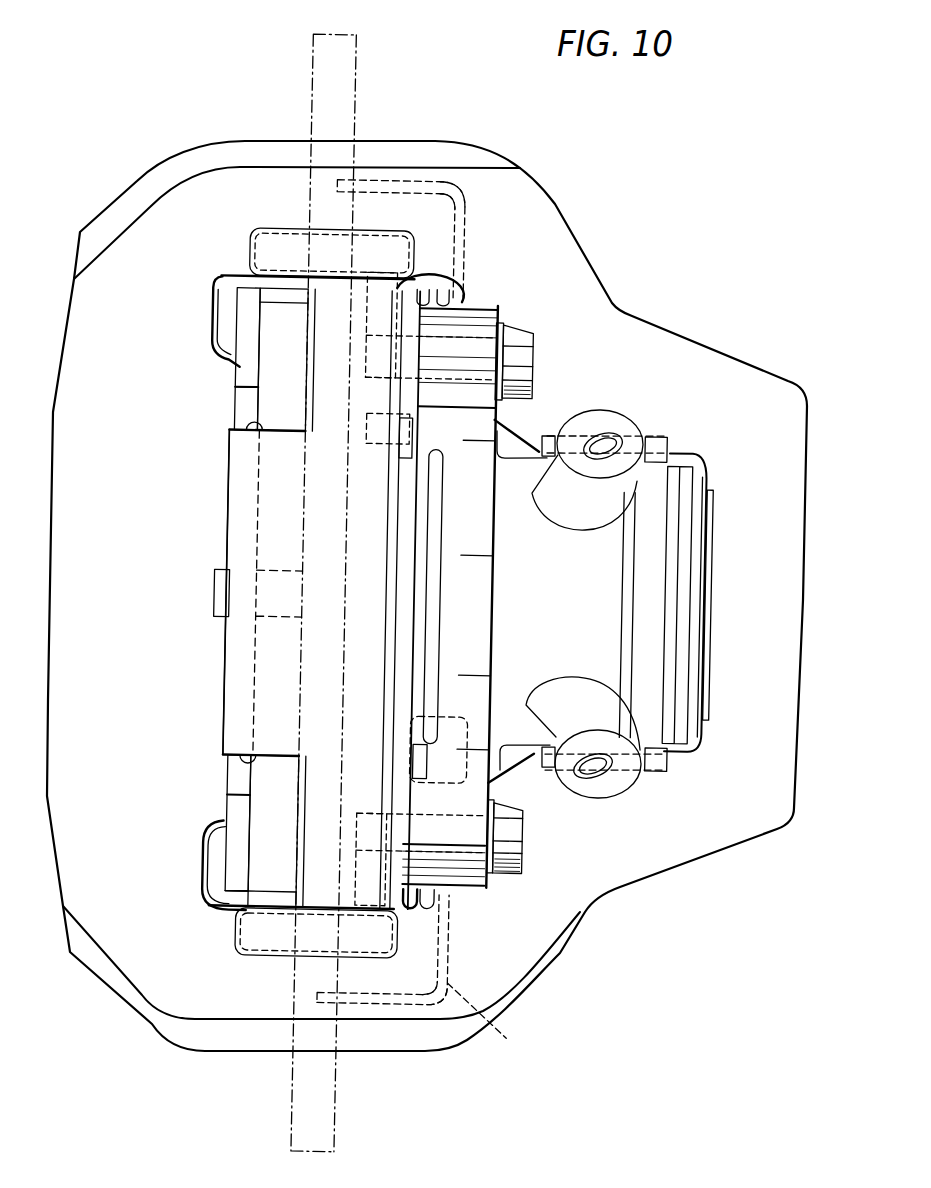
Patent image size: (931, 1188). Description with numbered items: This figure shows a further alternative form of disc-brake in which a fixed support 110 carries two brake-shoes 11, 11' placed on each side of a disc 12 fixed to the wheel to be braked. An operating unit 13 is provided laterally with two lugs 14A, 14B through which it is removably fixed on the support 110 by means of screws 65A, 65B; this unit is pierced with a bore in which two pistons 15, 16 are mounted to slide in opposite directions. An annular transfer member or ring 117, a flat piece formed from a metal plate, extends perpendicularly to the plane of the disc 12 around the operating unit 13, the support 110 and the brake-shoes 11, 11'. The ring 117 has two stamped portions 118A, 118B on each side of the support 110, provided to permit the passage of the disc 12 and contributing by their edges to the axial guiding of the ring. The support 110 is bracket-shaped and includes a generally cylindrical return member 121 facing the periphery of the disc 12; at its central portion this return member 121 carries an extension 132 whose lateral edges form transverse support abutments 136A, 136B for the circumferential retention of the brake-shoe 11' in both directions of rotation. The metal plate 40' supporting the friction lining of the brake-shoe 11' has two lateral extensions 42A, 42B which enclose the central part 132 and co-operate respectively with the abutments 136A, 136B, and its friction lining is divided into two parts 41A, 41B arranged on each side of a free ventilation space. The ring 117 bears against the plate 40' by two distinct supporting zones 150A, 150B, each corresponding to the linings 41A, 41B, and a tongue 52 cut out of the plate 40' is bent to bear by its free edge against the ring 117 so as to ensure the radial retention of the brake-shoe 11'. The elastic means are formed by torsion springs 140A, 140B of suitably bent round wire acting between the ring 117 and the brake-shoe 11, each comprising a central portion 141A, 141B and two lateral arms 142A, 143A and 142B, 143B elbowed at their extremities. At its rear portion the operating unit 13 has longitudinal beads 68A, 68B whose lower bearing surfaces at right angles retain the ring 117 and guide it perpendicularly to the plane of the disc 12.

The brake-shoe 11 is at (496, 597).
The brake-shoe 11' is at (208, 369).
The disc 12 is at (353, 70).
The operating unit 13 is at (686, 447).
The lug 14A is at (475, 347).
The lug 14B is at (475, 866).
The piston 15 is at (421, 498).
The piston 16 is at (711, 484).
The metal plate 40' is at (195, 901).
The friction lining part 41A is at (293, 390).
The friction lining part 41B is at (298, 832).
The lateral extension 42A is at (236, 417).
The lateral extension 42B is at (236, 777).
The tongue 52 is at (218, 603).
The screw 65A is at (528, 326).
The screw 65B is at (527, 837).
The longitudinal bead 68A is at (652, 433).
The longitudinal bead 68B is at (653, 766).
The fixed support 110 is at (215, 749).
The transfer ring 117 is at (562, 207).
The stamped portion 118A is at (270, 242).
The stamped portion 118B is at (267, 940).
The return member 121 is at (327, 317).
The extension 132 is at (296, 567).
The transverse support abutment 136A is at (260, 435).
The transverse support abutment 136B is at (263, 758).
The torsion spring 140A is at (454, 186).
The torsion spring 140B is at (451, 1001).
The central portion 141A is at (421, 286).
The central portion 141B is at (423, 895).
The lateral arm 142A is at (424, 171).
The lateral arm 142B is at (446, 973).
The lateral arm 143A is at (398, 424).
The lateral arm 143B is at (424, 776).
The supporting zone 150A is at (235, 369).
The supporting zone 150B is at (233, 830).